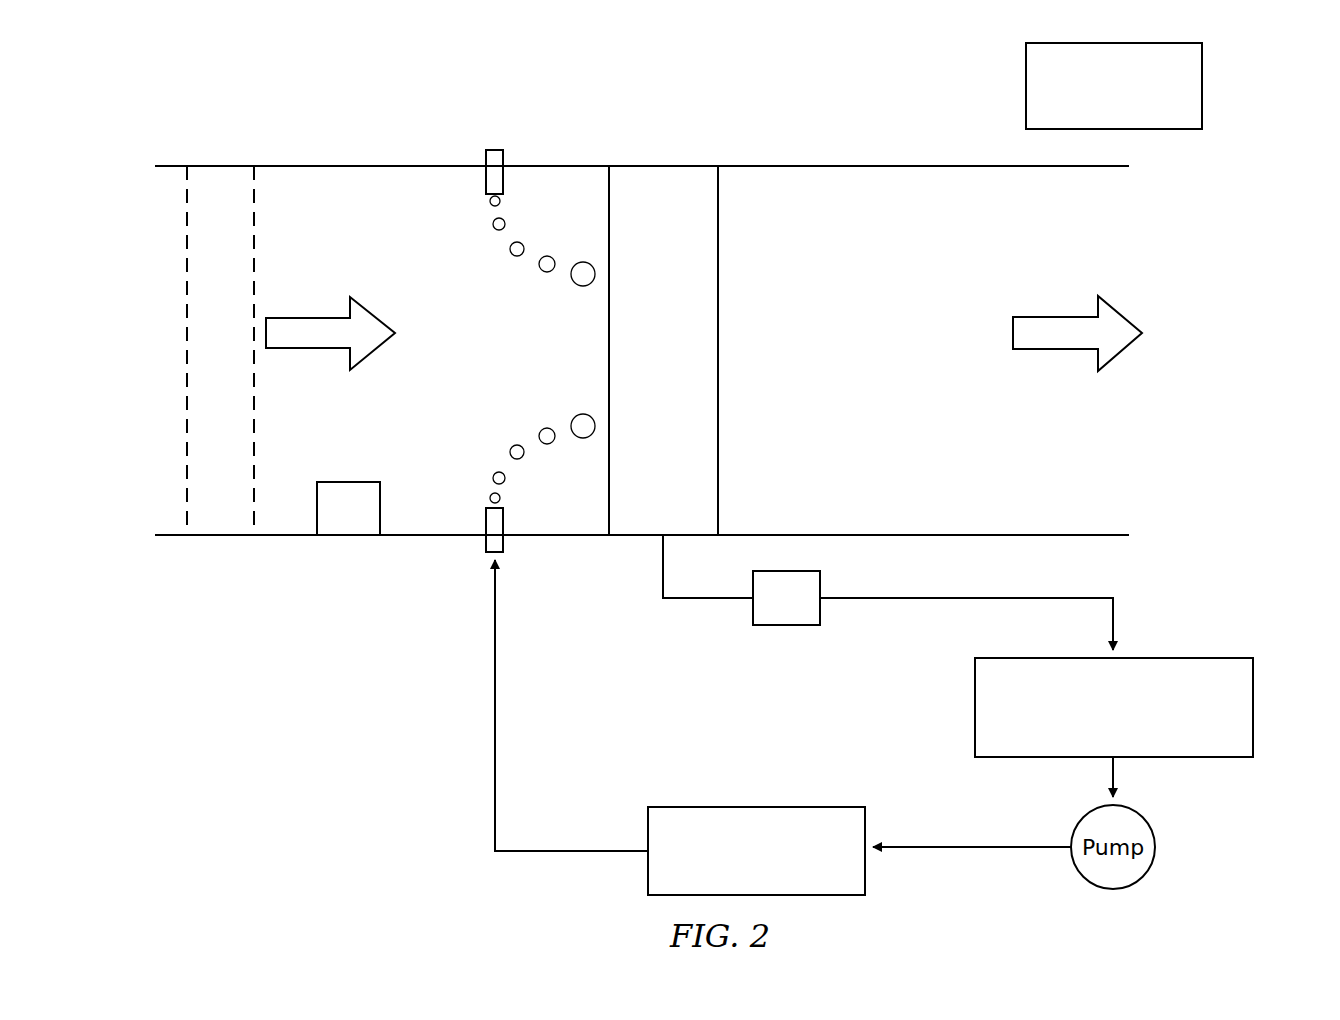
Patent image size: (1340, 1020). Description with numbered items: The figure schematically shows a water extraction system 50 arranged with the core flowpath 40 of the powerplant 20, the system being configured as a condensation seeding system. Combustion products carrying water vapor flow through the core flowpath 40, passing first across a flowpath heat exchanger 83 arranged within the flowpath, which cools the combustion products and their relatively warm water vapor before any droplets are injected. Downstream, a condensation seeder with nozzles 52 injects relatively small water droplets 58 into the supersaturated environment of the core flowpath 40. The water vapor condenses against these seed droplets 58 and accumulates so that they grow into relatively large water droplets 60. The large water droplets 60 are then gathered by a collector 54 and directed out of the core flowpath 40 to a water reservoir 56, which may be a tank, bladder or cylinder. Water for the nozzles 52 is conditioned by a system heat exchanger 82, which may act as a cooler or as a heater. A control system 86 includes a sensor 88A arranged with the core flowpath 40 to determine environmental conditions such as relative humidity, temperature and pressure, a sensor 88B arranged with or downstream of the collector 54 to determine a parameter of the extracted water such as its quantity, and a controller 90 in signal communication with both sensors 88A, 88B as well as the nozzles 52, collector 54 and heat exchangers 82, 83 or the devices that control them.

The gas turbine engine flow duct 20 is at (223, 131).
The core flowpath 40 is at (350, 247).
The water extraction system 50 is at (395, 750).
The nozzles 52 is at (507, 158).
The collector 54 is at (718, 288).
The water reservoir 56 is at (975, 720).
The small water droplets 58 is at (490, 206).
The large water droplets 60 is at (580, 286).
The system heat exchanger 82 is at (760, 807).
The flowpath heat exchanger 83 is at (185, 480).
The control system 86 is at (1243, 73).
The sensor 88A is at (366, 523).
The sensor 88B is at (805, 612).
The controller 90 is at (1026, 103).